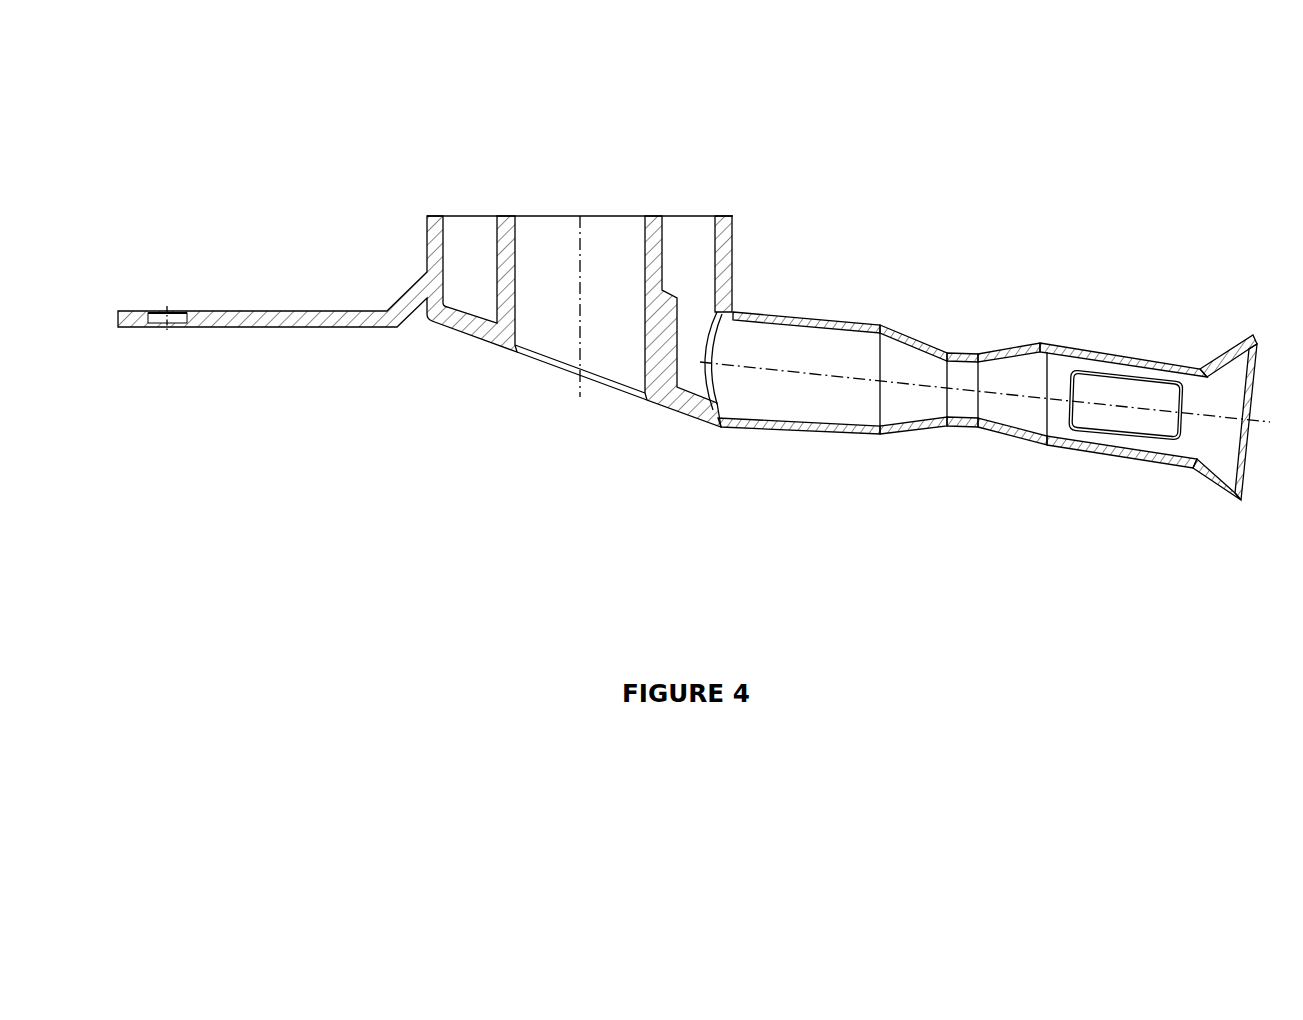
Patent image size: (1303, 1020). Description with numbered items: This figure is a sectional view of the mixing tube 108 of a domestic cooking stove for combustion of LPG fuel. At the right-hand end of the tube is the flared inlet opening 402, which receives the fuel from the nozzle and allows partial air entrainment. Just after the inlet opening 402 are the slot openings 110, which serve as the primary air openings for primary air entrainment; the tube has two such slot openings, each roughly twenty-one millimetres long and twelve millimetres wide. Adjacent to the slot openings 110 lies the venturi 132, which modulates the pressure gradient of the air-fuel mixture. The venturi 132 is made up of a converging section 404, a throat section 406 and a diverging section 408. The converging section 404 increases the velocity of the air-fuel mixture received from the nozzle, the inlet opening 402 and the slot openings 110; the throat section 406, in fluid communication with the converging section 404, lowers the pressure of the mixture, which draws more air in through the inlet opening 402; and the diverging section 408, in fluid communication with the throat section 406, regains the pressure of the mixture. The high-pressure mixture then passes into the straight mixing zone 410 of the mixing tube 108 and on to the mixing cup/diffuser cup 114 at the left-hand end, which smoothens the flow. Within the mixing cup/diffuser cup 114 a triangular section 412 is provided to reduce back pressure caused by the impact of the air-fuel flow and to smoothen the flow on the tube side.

The mixing tube 108 is at (758, 148).
The mixing cup/diffuser cup 114 is at (718, 228).
The venturi 132 is at (962, 347).
The slot openings 110 is at (1127, 383).
The triangular section 412 is at (667, 355).
The straight mixing zone 410 is at (800, 397).
The diverging section 408 is at (892, 397).
The throat section 406 is at (965, 400).
The converging section 404 is at (1018, 418).
The inlet opening 402 is at (1235, 445).